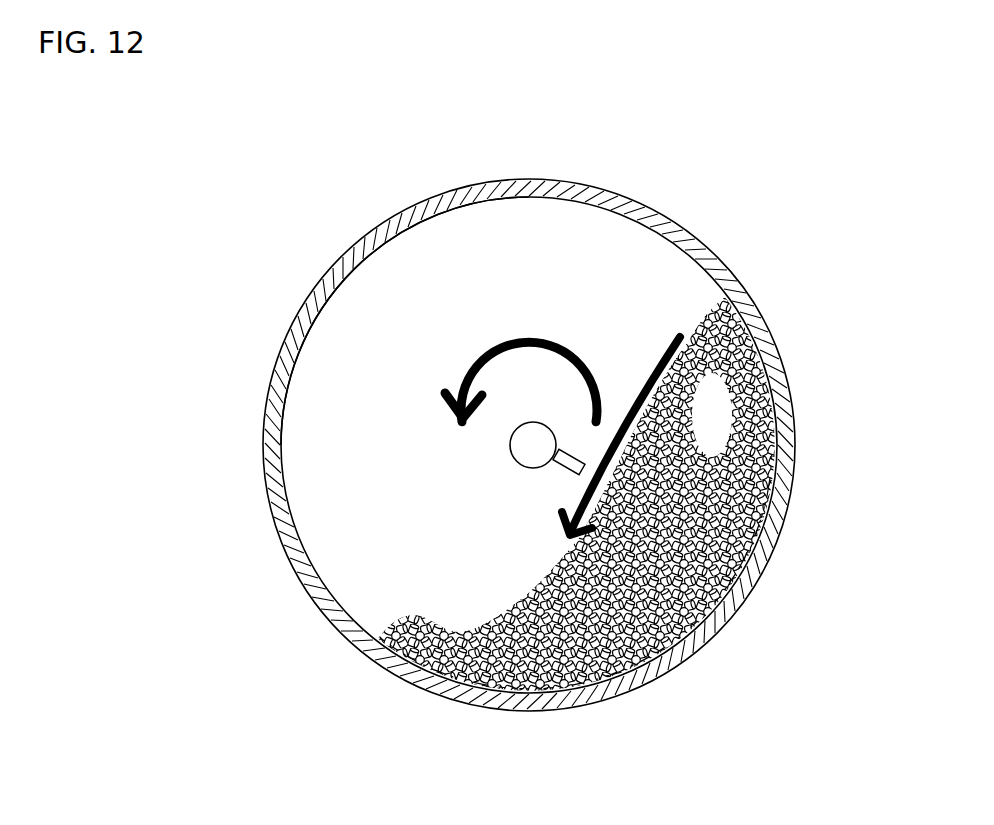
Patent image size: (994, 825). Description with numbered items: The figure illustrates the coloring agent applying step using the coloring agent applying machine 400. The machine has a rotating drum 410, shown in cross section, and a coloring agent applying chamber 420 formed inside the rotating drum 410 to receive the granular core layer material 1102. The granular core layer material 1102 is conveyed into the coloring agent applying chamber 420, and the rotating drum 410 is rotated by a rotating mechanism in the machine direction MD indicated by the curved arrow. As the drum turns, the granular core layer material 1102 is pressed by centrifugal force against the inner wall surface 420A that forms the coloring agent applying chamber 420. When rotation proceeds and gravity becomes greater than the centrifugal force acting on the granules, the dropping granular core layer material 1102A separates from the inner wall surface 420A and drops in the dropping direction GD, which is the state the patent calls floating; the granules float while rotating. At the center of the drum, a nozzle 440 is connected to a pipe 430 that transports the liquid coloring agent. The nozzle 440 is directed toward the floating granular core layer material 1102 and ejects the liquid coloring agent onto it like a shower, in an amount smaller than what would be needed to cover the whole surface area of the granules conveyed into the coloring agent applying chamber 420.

The coloring agent applying machine 400 is at (748, 233).
The rotating drum 410 is at (297, 330).
The coloring agent applying chamber 420 is at (410, 477).
The inner wall surface 420A is at (767, 525).
The pipe 430 is at (534, 436).
The nozzle 440 is at (568, 468).
The granular core layer material 1102 is at (727, 608).
The dropping granular core layer material 1102A is at (683, 425).
The machine direction MD is at (493, 345).
The dropping direction GD is at (645, 378).